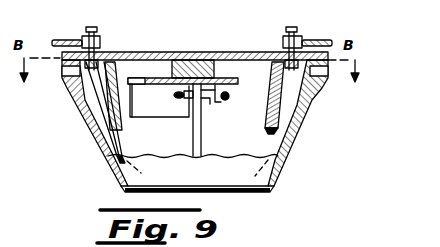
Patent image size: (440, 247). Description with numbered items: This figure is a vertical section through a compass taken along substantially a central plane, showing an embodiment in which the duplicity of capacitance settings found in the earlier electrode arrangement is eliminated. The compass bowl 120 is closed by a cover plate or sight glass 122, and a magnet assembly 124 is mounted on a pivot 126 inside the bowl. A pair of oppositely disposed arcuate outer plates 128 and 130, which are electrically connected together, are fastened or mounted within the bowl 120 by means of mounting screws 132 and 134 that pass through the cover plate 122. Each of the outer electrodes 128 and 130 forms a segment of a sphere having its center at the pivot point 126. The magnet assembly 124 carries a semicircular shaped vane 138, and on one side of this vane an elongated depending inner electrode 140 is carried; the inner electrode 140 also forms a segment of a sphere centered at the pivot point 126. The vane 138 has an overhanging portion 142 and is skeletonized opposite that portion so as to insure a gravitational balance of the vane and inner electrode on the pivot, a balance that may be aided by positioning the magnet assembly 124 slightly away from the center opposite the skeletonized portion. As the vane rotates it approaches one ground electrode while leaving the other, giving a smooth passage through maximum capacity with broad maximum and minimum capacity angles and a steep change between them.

The compass bowl 120 is at (80, 126).
The cover plate or sight glass 122 is at (189, 53).
The magnet assembly 124 is at (228, 98).
The pivot 126 is at (208, 102).
The arcuate outer plate 128 is at (277, 124).
The arcuate outer plate 130 is at (121, 130).
The mounting screw 132 is at (92, 28).
The mounting screw 134 is at (294, 28).
The semicircular shaped vane 138 is at (222, 78).
The inner electrode 140 is at (154, 118).
The overhanging portion 142 is at (229, 84).